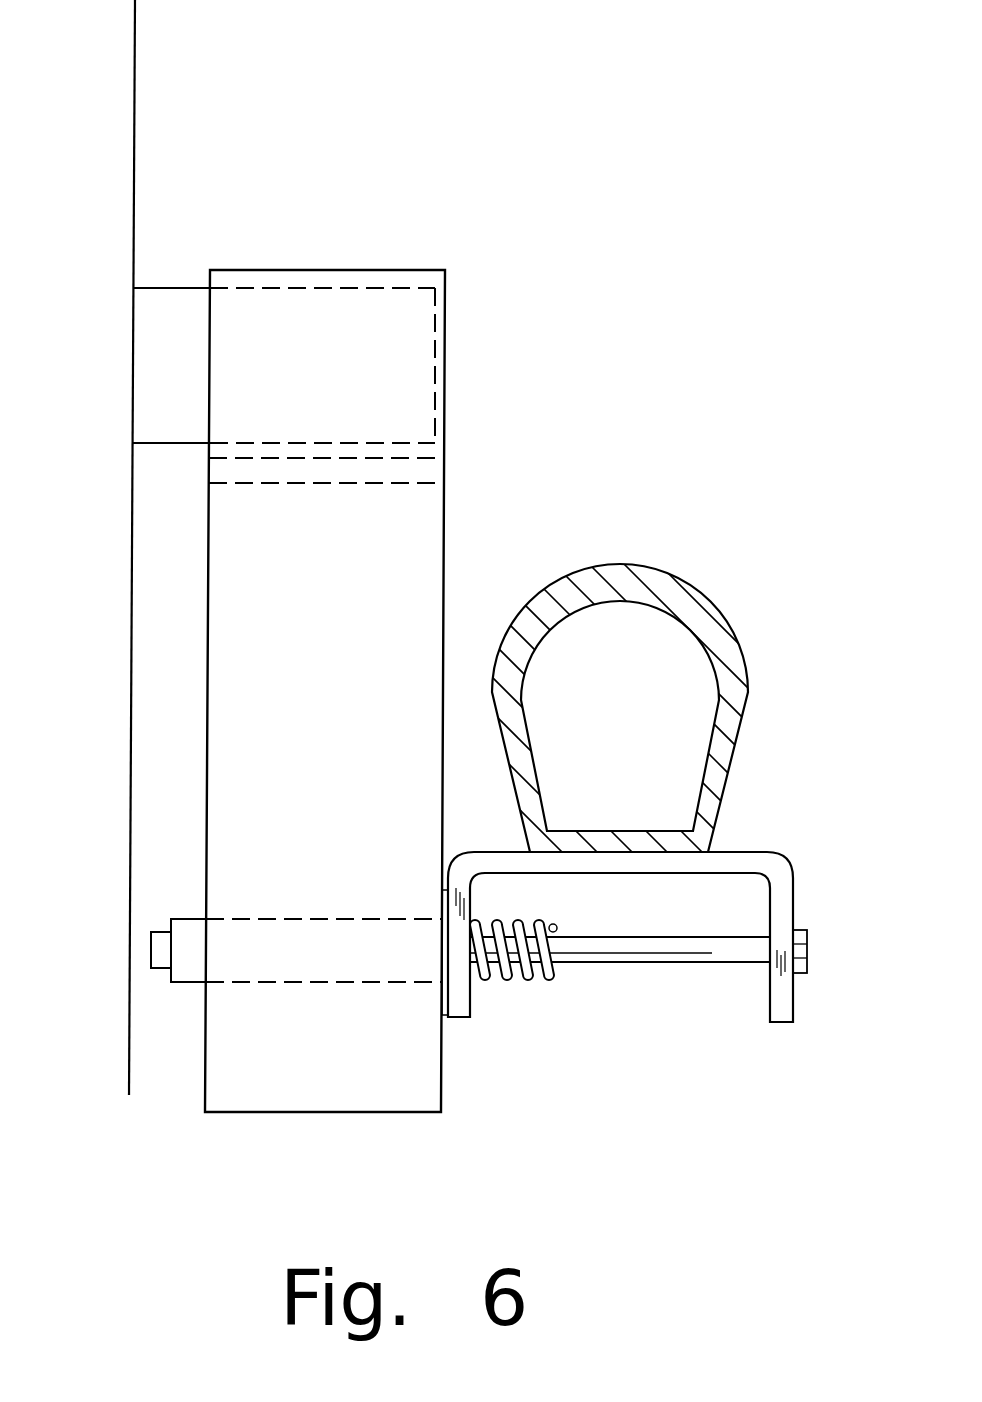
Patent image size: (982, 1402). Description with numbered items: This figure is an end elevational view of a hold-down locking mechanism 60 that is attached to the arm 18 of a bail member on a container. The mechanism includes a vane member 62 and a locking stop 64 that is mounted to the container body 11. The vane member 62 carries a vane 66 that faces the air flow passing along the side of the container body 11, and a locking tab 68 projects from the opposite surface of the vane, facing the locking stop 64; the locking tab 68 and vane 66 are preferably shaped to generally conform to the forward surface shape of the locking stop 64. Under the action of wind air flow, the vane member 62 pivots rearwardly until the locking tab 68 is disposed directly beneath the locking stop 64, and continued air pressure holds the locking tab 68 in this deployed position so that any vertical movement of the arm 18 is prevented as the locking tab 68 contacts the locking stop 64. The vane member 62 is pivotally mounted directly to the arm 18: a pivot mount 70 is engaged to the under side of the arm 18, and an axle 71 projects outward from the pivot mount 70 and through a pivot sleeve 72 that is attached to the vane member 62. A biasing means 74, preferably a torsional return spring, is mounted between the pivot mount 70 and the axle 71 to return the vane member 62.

The container body 11 is at (134, 97).
The arm 18 is at (643, 577).
The hold-down locking mechanism 60 is at (178, 1110).
The vane member 62 is at (470, 316).
The locking stop 64 is at (166, 303).
The vane 66 is at (240, 622).
The locking tab 68 is at (406, 470).
The pivot mount 70 is at (788, 893).
The axle 71 is at (661, 955).
The pivot sleeve 72 is at (190, 930).
The biasing means 74 is at (510, 970).